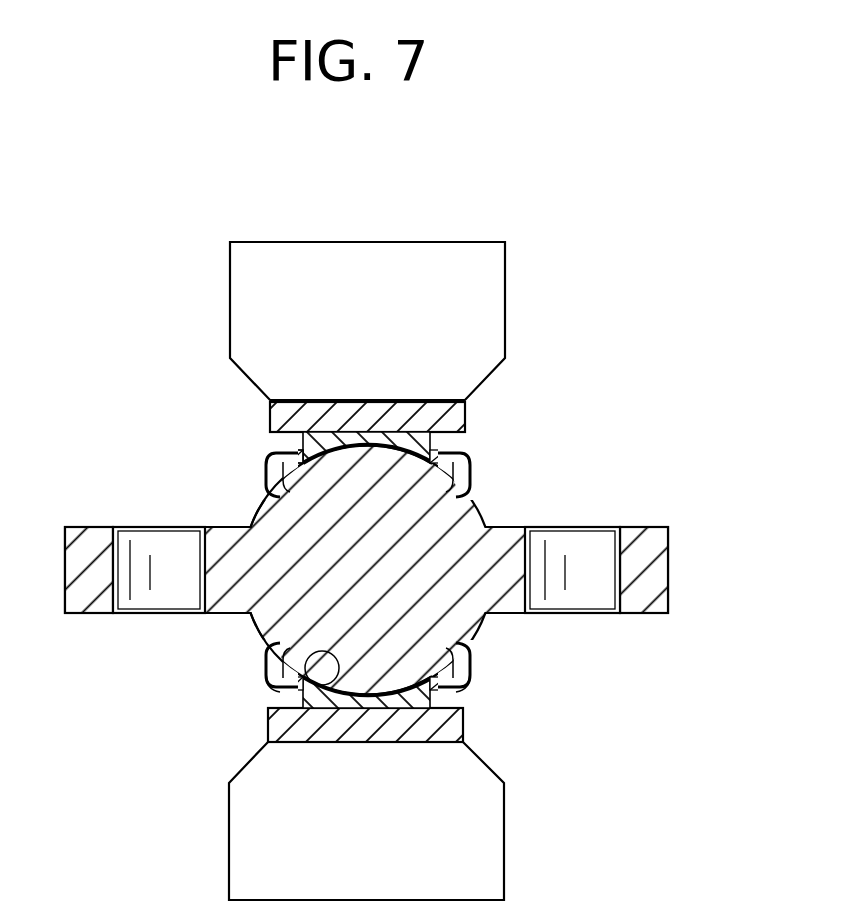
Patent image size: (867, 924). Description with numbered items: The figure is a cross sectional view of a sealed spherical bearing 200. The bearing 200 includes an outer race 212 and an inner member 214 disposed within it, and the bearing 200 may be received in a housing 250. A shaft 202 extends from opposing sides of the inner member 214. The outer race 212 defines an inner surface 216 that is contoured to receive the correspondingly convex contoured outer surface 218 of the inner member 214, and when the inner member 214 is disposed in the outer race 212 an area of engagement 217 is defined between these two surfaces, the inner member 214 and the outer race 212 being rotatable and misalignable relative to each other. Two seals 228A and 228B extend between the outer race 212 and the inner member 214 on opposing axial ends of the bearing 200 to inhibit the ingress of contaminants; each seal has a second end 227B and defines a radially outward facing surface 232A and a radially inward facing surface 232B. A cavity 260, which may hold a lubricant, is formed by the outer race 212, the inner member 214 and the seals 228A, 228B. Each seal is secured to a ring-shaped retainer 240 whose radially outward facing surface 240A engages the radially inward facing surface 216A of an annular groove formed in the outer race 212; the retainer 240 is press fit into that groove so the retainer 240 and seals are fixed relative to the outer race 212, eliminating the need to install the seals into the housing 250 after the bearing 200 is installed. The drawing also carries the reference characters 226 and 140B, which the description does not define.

The bearing 200 is at (399, 514).
The shaft 202 is at (95, 527).
The outer race 212 is at (263, 428).
The inner member 214 is at (253, 615).
The inner surface 216 is at (322, 441).
The radially inward facing surface 216A is at (455, 700).
The area of engagement 217 is at (338, 700).
The outer surface 218 is at (452, 440).
The shoulder 226 is at (253, 527).
The second end 227B is at (265, 492).
The seal 228A is at (465, 458).
The seal 228B is at (272, 458).
The radially outward facing surface 232A is at (300, 705).
The radially inward facing surface 232B is at (462, 640).
The retainer 240 is at (447, 452).
The radially outward facing surface 240A is at (289, 452).
The housing 250 is at (468, 410).
The cavity 260 is at (470, 470).
The lower yoke 140B is at (350, 742).